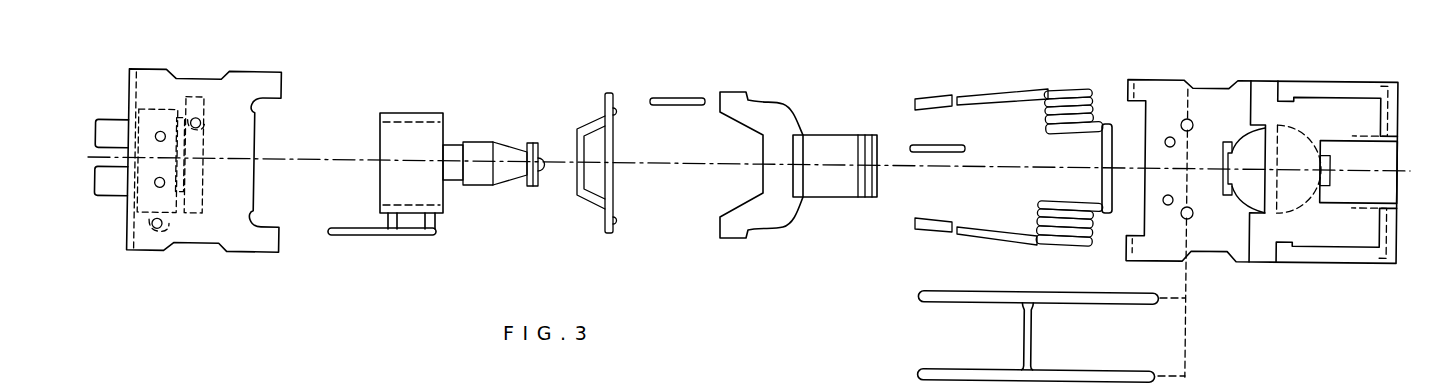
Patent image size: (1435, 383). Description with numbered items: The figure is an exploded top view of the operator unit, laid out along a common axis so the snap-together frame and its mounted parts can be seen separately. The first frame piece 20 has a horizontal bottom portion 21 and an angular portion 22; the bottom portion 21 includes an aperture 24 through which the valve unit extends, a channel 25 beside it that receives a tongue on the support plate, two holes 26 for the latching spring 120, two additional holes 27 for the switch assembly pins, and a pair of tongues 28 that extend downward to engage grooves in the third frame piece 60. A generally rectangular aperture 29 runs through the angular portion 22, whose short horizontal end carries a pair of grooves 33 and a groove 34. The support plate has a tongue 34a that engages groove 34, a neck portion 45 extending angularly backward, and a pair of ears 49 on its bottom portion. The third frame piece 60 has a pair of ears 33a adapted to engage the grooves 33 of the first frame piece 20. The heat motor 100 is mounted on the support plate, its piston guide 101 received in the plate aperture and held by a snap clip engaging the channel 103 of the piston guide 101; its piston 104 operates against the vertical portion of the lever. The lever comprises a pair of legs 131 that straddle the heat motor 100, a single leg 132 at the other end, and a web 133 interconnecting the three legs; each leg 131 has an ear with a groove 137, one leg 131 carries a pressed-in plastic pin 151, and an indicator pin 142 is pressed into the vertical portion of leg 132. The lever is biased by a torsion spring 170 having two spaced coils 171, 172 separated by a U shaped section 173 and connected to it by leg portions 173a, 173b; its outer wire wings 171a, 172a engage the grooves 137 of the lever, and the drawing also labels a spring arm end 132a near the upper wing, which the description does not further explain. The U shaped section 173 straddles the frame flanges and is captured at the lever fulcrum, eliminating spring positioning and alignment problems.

The first frame piece 20 is at (1205, 81).
The horizontal bottom portion 21 is at (1217, 240).
The angular portion 22 is at (1332, 110).
The aperture 24 is at (1250, 208).
The channel 25 is at (1228, 147).
The holes 26 is at (1186, 118).
The additional holes 27 is at (1167, 136).
The tongues 28 is at (1128, 247).
The rectangular aperture 29 is at (1342, 202).
The grooves 33 is at (1290, 93).
The ears 33a is at (266, 113).
The groove 34 is at (255, 186).
The tongue 34a is at (613, 172).
The neck portion 45 is at (593, 172).
The ears 49 is at (614, 221).
The third frame piece 60 is at (217, 254).
The heat motor 100 is at (417, 113).
The piston guide 101 is at (475, 142).
The channel 103 is at (452, 143).
The piston 104 is at (547, 157).
The latching spring 120 is at (947, 291).
The legs 131 is at (730, 115).
The leg 132 is at (873, 199).
The spring arm end 132a is at (1018, 88).
The web 133 is at (837, 135).
The groove 137 is at (755, 101).
The indicator pin 142 is at (952, 145).
The plastic pin 151 is at (691, 97).
The torsion spring 170 is at (992, 73).
The coil 171 is at (1060, 135).
The outer wire wing 171a is at (916, 228).
The coil 172 is at (1037, 208).
The outer wire wing 172a is at (930, 98).
The U shaped section 173 is at (1102, 183).
The leg portion 173a is at (1097, 125).
The leg portion 173b is at (1095, 247).